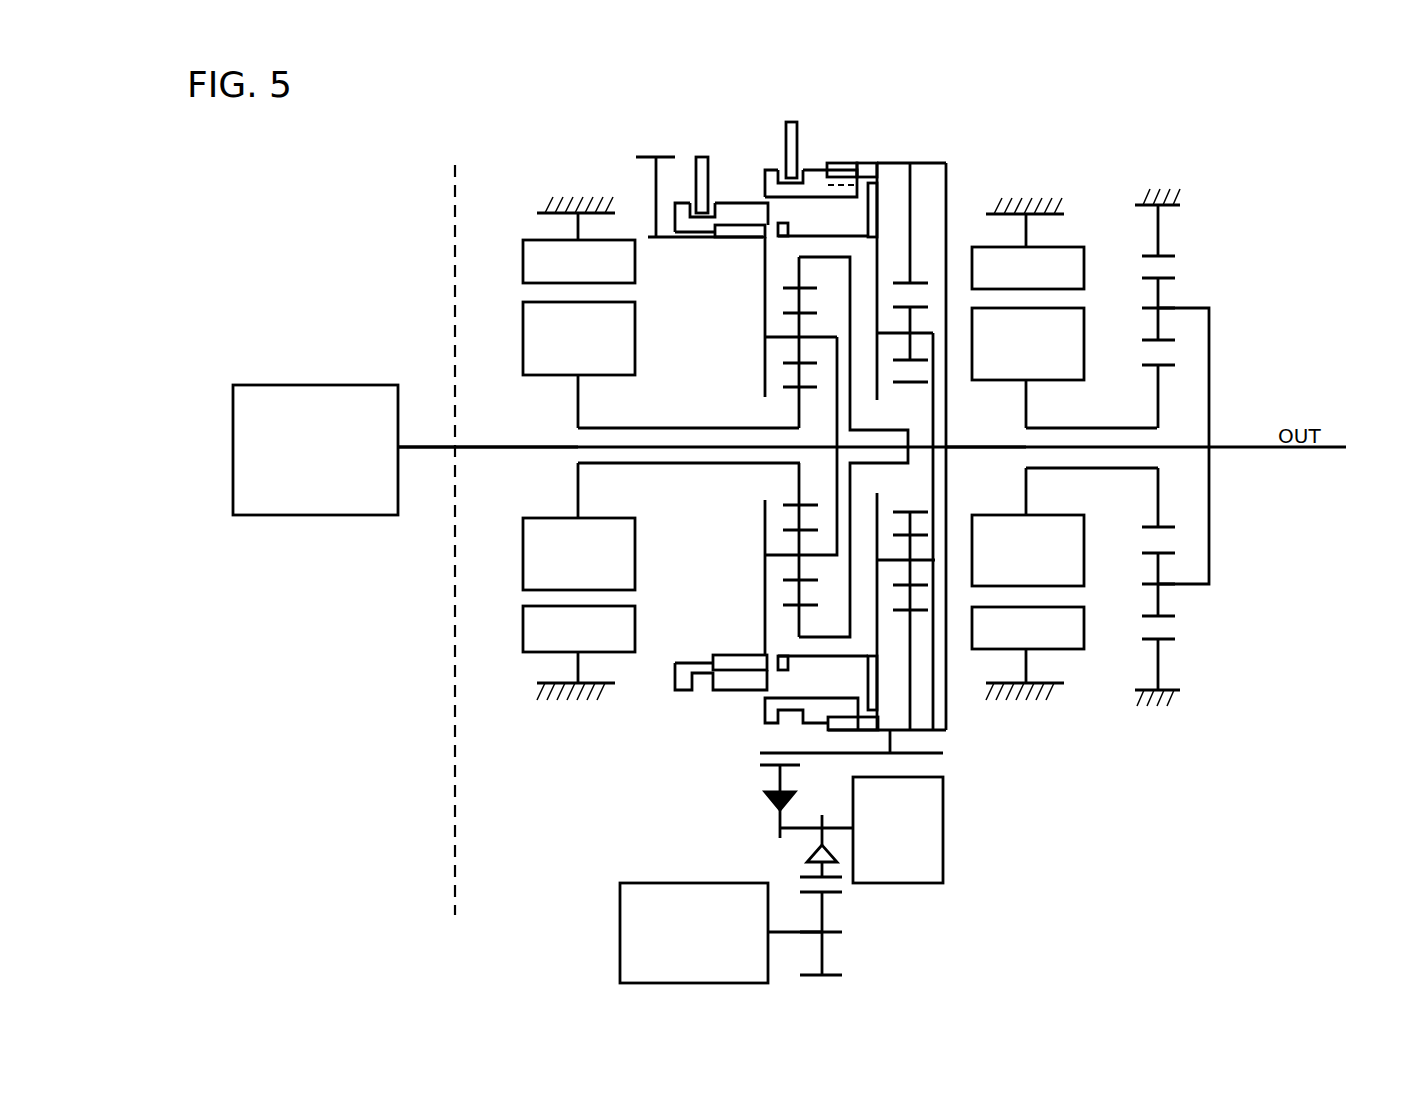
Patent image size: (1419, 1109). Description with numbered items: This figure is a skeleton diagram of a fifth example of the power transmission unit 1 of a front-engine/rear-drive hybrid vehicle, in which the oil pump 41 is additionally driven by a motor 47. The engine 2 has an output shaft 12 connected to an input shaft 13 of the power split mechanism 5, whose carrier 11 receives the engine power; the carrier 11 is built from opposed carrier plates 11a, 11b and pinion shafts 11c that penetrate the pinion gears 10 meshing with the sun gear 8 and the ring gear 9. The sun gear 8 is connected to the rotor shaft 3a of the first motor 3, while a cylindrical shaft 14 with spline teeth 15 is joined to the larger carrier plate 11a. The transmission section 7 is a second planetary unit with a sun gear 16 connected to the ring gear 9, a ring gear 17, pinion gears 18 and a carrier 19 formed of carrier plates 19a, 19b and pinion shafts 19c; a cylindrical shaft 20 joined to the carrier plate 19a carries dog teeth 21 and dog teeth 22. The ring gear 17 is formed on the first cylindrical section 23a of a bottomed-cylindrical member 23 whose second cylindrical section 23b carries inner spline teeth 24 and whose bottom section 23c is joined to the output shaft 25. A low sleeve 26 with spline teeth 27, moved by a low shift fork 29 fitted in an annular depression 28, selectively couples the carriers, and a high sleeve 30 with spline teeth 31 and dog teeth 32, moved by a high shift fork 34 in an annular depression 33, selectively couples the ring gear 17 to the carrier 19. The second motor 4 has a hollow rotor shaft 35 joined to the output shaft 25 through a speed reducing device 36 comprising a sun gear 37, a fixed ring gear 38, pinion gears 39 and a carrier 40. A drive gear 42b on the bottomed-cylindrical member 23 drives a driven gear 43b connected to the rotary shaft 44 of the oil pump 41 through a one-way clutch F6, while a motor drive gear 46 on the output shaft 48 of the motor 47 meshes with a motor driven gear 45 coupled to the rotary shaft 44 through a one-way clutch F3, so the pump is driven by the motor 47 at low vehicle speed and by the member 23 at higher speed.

The power transmission unit 1 is at (422, 188).
The engine 2 is at (310, 517).
The first motor 3 is at (512, 235).
The rotor shaft 3a is at (663, 428).
The second motor 4 is at (1091, 214).
The power split mechanism 5 is at (972, 135).
The transmission section 7 is at (950, 697).
The sun gear 8 is at (787, 380).
The ring gear 9 is at (788, 288).
The pinion gears 10 is at (788, 308).
The carrier 11 is at (753, 338).
The carrier plate 11a is at (763, 360).
The carrier plate 11b is at (835, 395).
The pinion shafts 11c is at (783, 335).
The output shaft 12 is at (427, 448).
The input shaft 13 is at (500, 448).
The cylindrical shaft 14 is at (670, 238).
The spline teeth 15 is at (740, 237).
The sun gear 16 is at (907, 531).
The ring gear 17 is at (918, 283).
The pinion gears 18 is at (895, 307).
The carrier 19 is at (928, 568).
The carrier plate 19a is at (873, 297).
The carrier plate 19b is at (948, 398).
The pinion shafts 19c is at (933, 333).
The cylindrical shaft 20 is at (845, 235).
The dog teeth 21 is at (783, 227).
The dog teeth 22 is at (880, 186).
The bottomed-cylindrical member 23 is at (952, 168).
The first cylindrical section 23a is at (912, 190).
The second cylindrical section 23b is at (893, 155).
The bottom section 23c is at (948, 494).
The spline teeth 24 is at (850, 163).
The output shaft 25 is at (988, 448).
The low sleeve 26 is at (743, 203).
The spline teeth 27 is at (728, 223).
The annular depression 28 is at (693, 205).
The low shift fork 29 is at (702, 157).
The high sleeve 30 is at (813, 170).
The spline teeth 31 is at (832, 163).
The dog teeth 32 is at (850, 178).
The annular depression 33 is at (783, 170).
The high shift fork 34 is at (788, 122).
The rotor shaft 35 is at (1074, 428).
The speed reducing device 36 is at (1243, 325).
The sun gear 37 is at (1169, 369).
The ring gear 38 is at (1163, 256).
The pinion gears 39 is at (1169, 279).
The carrier 40 is at (1211, 365).
The oil pump 41 is at (945, 827).
The drive gear 42b is at (933, 753).
The driven gear 43b is at (763, 767).
The rotary shaft 44 is at (797, 825).
The motor driven gear 45 is at (805, 878).
The motor drive gear 46 is at (833, 975).
The motor 47 is at (620, 930).
The output shaft 48 is at (833, 932).
The one-way clutch F3 is at (802, 853).
The one-way clutch F6 is at (762, 800).